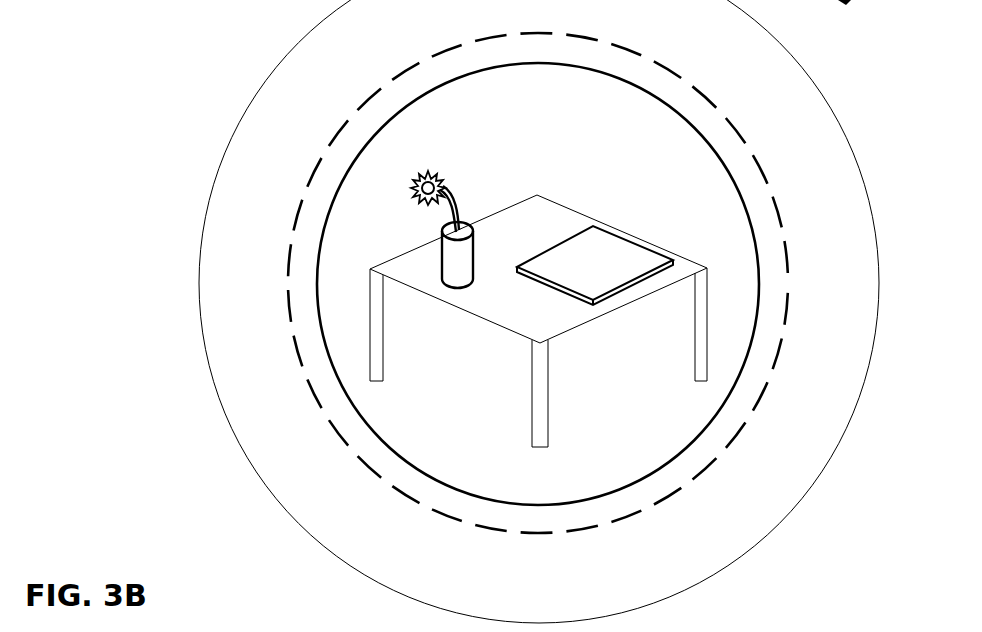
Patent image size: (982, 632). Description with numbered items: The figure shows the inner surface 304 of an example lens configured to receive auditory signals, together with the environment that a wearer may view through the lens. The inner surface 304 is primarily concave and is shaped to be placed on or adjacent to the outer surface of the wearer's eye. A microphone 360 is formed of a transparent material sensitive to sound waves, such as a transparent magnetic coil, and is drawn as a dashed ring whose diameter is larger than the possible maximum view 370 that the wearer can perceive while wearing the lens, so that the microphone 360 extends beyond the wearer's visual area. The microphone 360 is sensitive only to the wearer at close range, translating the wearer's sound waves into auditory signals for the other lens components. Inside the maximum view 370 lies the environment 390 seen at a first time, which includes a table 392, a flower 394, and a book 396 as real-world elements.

The inner surface 304 is at (143, 384).
The microphone 360 is at (608, 528).
The maximum view 370 is at (540, 65).
The environment 390 is at (574, 169).
The table 392 is at (588, 349).
The flower 394 is at (446, 238).
The book 396 is at (614, 272).